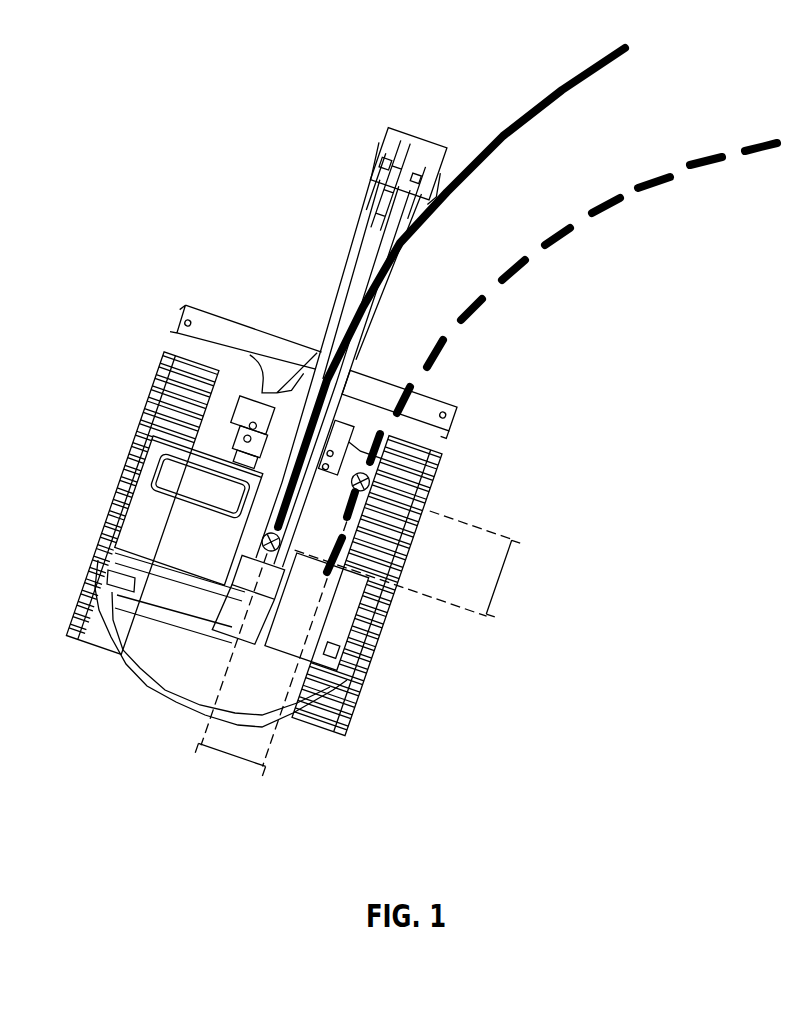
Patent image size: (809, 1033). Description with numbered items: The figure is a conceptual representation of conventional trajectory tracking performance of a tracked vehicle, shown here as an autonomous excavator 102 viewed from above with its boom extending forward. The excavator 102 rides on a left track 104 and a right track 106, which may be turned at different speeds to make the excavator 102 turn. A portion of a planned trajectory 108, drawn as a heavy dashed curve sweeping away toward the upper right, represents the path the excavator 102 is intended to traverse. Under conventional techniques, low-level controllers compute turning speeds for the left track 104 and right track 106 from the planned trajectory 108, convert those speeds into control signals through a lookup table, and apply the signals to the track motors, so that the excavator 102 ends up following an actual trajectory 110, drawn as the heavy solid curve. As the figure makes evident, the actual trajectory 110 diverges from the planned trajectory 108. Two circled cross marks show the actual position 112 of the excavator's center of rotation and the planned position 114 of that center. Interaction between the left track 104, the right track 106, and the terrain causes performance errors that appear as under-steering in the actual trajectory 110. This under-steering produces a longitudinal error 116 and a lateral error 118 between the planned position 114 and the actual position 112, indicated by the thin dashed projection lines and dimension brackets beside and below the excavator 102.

The autonomous excavator 102 is at (142, 706).
The left track 104 is at (440, 470).
The right track 106 is at (150, 398).
The planned trajectory 108 is at (603, 212).
The actual trajectory 110 is at (537, 98).
The actual position 112 is at (262, 542).
The planned position 114 is at (353, 490).
The longitudinal error 116 is at (503, 578).
The lateral error 118 is at (232, 750).